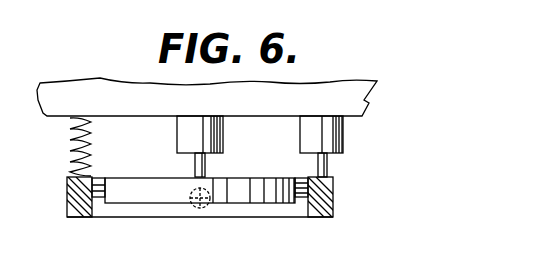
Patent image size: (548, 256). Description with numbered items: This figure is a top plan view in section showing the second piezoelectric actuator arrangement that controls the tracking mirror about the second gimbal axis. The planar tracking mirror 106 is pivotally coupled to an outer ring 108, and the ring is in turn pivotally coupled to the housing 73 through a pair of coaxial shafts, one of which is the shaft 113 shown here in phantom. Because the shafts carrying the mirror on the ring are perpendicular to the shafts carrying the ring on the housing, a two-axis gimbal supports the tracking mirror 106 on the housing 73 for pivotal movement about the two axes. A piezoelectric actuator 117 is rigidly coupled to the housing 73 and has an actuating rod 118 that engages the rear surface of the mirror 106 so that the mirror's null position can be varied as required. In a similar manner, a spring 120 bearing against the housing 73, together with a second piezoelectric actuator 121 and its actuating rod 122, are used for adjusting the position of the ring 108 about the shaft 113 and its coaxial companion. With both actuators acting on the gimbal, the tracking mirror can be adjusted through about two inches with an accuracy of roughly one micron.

The housing 73 is at (368, 102).
The tracking mirror 106 is at (268, 206).
The outer ring 108 is at (332, 197).
The shaft 113 is at (187, 215).
The piezoelectric actuator 117 is at (177, 130).
The actuating rod 118 is at (205, 168).
The spring 120 is at (71, 163).
The piezoelectric actuator 121 is at (338, 133).
The actuating rod 122 is at (328, 162).